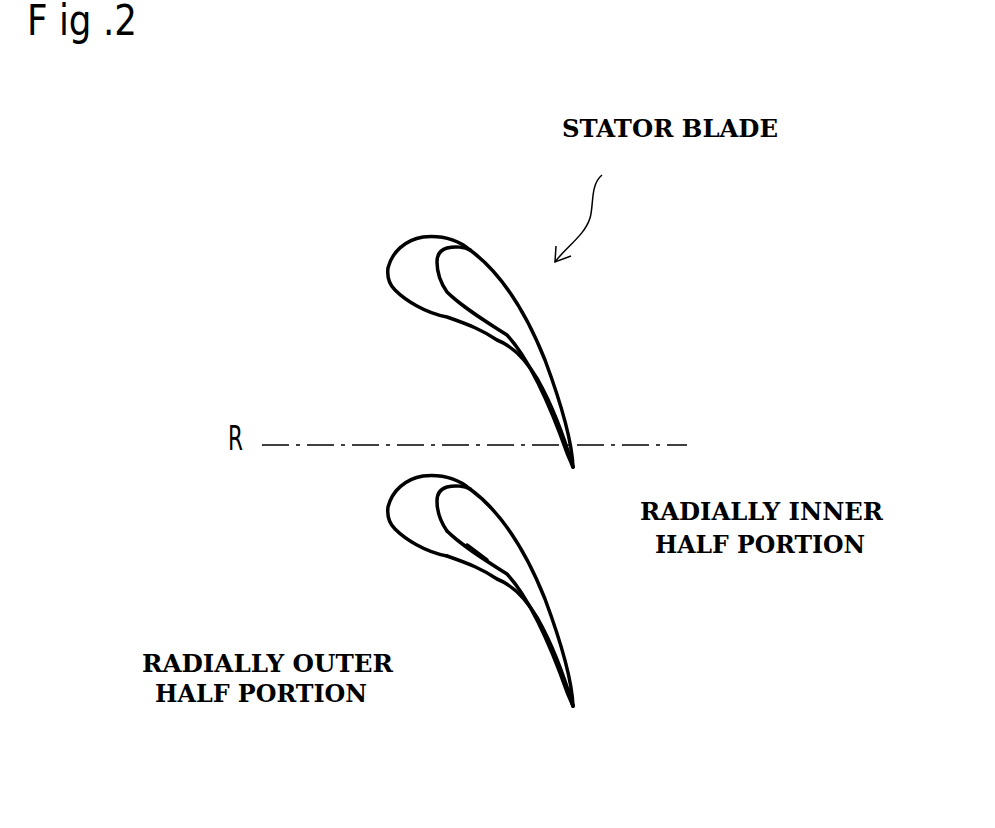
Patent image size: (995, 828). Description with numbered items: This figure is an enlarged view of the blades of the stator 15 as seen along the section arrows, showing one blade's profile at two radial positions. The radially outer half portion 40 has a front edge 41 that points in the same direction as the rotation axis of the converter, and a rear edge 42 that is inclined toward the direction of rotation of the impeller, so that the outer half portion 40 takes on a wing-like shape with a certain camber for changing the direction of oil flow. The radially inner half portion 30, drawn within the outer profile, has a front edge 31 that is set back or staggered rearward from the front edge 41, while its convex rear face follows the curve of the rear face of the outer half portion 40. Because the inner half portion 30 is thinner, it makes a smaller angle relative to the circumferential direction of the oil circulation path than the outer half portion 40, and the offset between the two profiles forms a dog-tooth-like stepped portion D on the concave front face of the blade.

The stator 15 is at (535, 265).
The radially inner half portion 30 is at (507, 543).
The front edge 31 is at (443, 483).
The radially outer half portion 40 is at (458, 563).
The front edge 41 is at (388, 512).
The rear edge 42 is at (572, 712).
The stepped portion D is at (480, 563).